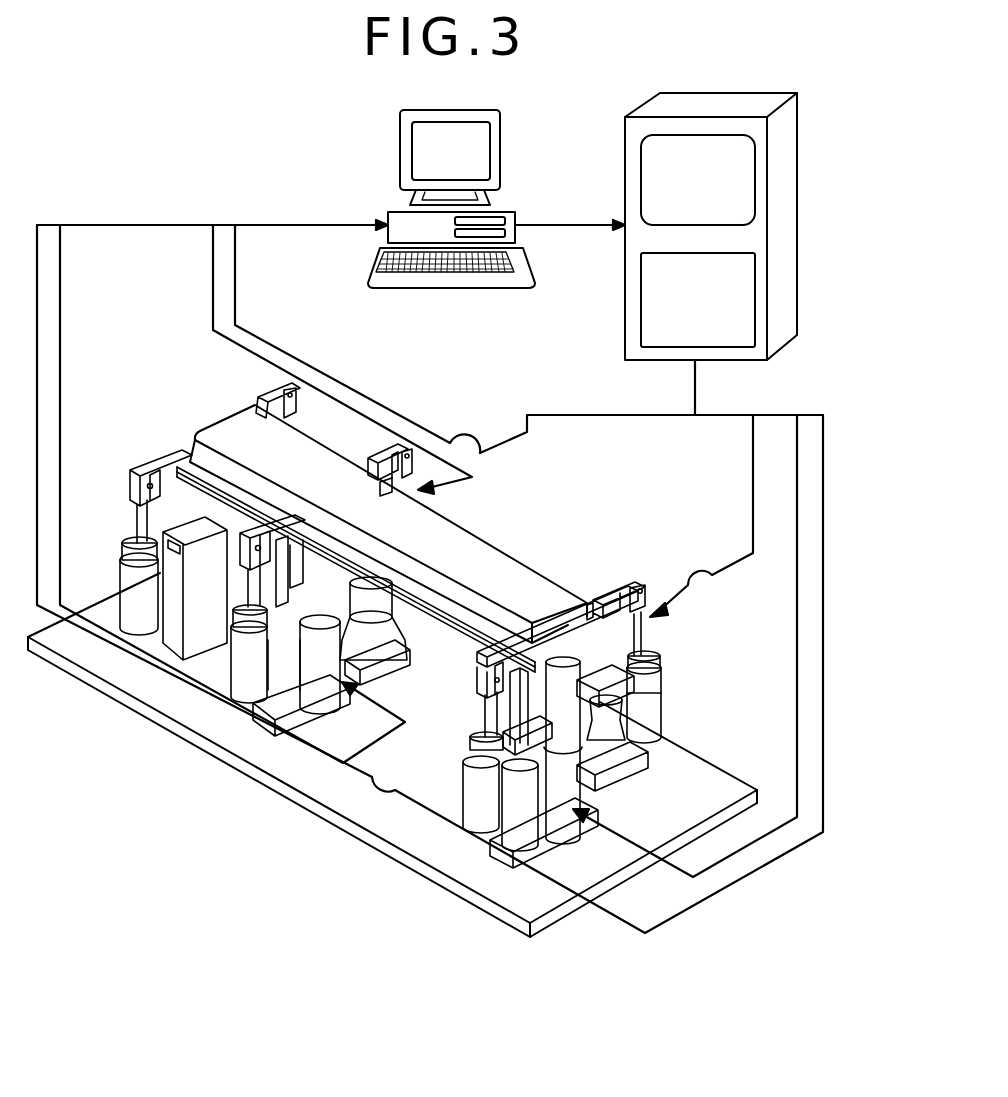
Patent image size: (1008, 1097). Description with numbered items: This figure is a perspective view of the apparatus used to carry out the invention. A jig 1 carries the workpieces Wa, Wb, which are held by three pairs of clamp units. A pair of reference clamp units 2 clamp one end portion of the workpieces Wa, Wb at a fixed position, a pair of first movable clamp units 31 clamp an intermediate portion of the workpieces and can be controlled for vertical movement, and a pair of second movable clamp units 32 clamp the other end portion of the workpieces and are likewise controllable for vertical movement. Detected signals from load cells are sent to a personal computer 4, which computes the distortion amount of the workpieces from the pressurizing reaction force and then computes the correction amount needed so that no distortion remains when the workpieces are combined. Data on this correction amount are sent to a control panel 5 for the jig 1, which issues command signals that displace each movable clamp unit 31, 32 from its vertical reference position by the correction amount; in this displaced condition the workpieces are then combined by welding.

The jig 1 is at (310, 790).
The reference clamp unit 2 is at (256, 384).
The first movable clamp unit 31 is at (390, 440).
The second movable clamp unit 32 is at (638, 565).
The personal computer 4 is at (396, 140).
The control panel 5 is at (618, 163).
The workpiece Wa is at (482, 554).
The workpiece Wb is at (447, 638).